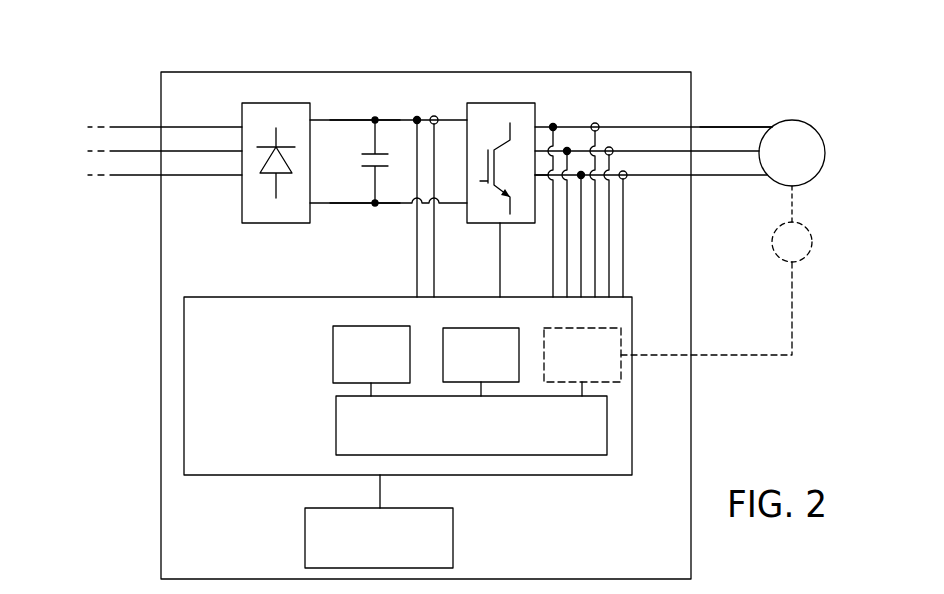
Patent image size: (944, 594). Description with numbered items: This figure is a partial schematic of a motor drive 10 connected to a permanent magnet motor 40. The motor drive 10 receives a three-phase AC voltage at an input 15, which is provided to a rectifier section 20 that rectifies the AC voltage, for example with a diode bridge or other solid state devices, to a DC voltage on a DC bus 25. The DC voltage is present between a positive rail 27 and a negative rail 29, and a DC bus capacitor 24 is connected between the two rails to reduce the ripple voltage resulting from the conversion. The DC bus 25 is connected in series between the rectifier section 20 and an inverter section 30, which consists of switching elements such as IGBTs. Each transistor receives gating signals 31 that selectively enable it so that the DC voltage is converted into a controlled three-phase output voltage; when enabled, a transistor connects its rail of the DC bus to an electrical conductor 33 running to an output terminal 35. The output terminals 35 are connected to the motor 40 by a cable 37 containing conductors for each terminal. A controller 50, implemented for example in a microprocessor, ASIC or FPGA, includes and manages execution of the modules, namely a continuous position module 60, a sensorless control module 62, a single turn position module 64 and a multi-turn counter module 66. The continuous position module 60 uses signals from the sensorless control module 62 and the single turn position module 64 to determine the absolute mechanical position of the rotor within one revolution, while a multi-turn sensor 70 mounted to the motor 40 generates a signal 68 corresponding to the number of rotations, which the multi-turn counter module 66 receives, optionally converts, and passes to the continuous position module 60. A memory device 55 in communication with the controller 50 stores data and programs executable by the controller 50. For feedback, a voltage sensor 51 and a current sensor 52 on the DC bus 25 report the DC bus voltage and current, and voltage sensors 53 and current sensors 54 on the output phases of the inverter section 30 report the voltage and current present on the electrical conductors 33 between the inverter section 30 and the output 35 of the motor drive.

The motor drive 10 is at (633, 72).
The input 15 is at (150, 121).
The rectifier section 20 is at (276, 103).
The DC bus capacitor 24 is at (352, 156).
The DC bus 25 is at (333, 100).
The positive rail 27 is at (343, 120).
The negative rail 29 is at (343, 204).
The inverter section 30 is at (500, 103).
The gating signals 31 is at (500, 260).
The electrical conductor 33 is at (543, 192).
The output terminal 35 is at (704, 118).
The cable 37 is at (745, 127).
The PM motor 40 is at (825, 153).
The controller 50 is at (230, 297).
The voltage sensor 51 is at (417, 120).
The current sensor 52 is at (434, 116).
The voltage sensors 53 is at (583, 170).
The current sensors 54 is at (624, 168).
The memory device 55 is at (453, 538).
The continuous position module 60 is at (484, 437).
The sensorless control module 62 is at (384, 369).
The single turn position module 64 is at (494, 369).
The multi-turn counter module 66 is at (595, 369).
The signal 68 is at (730, 357).
The multi-turn sensor 70 is at (812, 240).